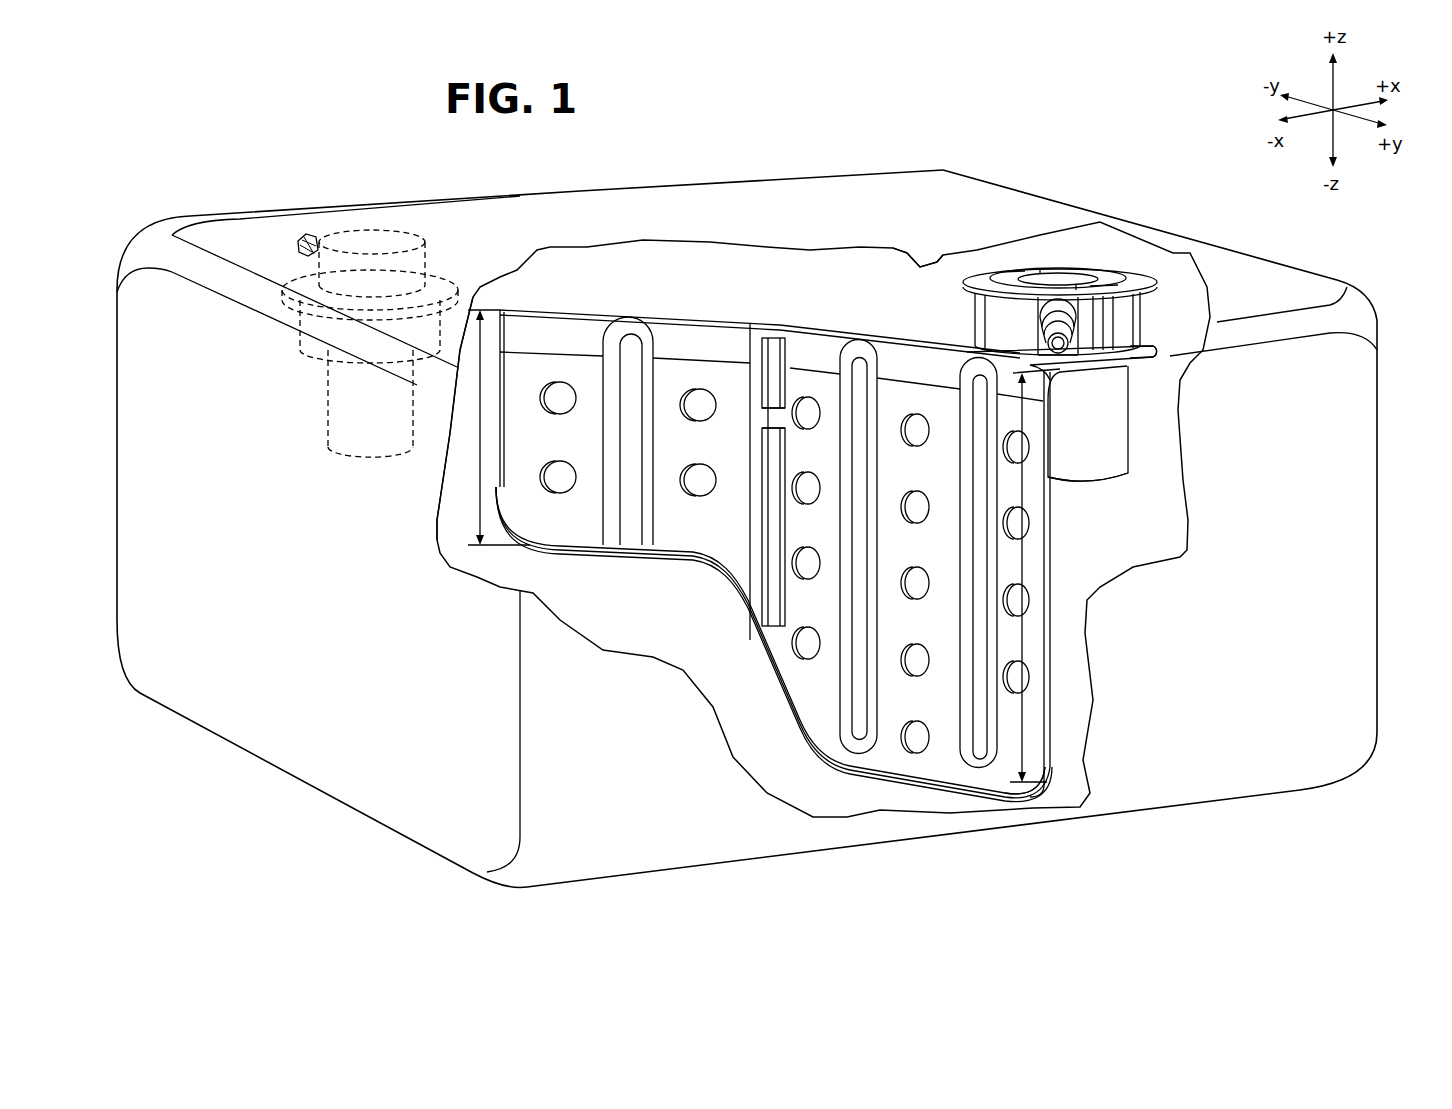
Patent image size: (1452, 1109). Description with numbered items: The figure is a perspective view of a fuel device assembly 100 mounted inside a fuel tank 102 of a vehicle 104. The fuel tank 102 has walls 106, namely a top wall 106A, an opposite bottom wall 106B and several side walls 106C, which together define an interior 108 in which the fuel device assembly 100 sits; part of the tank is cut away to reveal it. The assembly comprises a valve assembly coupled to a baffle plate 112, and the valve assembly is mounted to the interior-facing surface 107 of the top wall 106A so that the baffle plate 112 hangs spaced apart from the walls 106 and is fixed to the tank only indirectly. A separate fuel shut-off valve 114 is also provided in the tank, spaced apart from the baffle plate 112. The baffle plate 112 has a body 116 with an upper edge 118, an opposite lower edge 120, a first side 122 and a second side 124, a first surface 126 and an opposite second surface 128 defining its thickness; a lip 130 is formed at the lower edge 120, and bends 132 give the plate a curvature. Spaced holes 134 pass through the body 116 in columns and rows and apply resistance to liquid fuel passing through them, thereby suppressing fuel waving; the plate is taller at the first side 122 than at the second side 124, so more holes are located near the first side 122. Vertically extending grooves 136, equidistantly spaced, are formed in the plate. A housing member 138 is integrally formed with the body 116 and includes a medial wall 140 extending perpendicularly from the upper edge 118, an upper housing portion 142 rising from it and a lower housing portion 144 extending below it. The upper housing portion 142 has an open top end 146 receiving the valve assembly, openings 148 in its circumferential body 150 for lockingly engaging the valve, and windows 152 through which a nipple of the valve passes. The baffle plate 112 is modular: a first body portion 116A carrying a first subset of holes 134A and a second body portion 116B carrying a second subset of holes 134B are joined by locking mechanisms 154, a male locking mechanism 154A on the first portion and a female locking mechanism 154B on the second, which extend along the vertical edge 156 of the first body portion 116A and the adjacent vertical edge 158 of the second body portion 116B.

The fuel device assembly 100 is at (821, 542).
The fuel tank 102 is at (784, 495).
The vehicle 104 is at (784, 454).
The walls 106 is at (1005, 185).
The top wall 106A is at (848, 195).
The bottom wall 106B is at (1227, 807).
The side walls 106C is at (1340, 555).
The interior-facing surface 107 is at (940, 265).
The interior 108 is at (789, 506).
The baffle plate 112 is at (460, 480).
The fuel shut-off valve 114 is at (287, 231).
The body 116 is at (767, 578).
The first body portion 116A is at (1001, 819).
The second body portion 116B is at (576, 552).
The upper edge 118 is at (693, 325).
The lower edge 120 is at (900, 762).
The first side 122 is at (1047, 533).
The second side 124 is at (497, 393).
The first surface 126 is at (1053, 630).
The second surface 128 is at (817, 723).
The lip 130 is at (973, 790).
The bends 132 is at (787, 338).
The holes 134 is at (774, 578).
The first subset of holes 134A is at (947, 733).
The second subset of holes 134B is at (556, 462).
The grooves 136 is at (628, 335).
The housing member 138 is at (1145, 442).
The medial wall 140 is at (1105, 360).
The upper housing portion 142 is at (1137, 312).
The lower housing portion 144 is at (1117, 453).
The open top end 146 is at (1005, 308).
The openings 148 is at (1140, 350).
The circumferential body 150 is at (1000, 333).
The windows 152 is at (1072, 335).
The locking mechanisms 154 is at (773, 517).
The male locking mechanism 154A is at (787, 528).
The female locking mechanism 154B is at (762, 510).
The vertical edge 156 is at (777, 413).
The vertical edge 158 is at (767, 418).